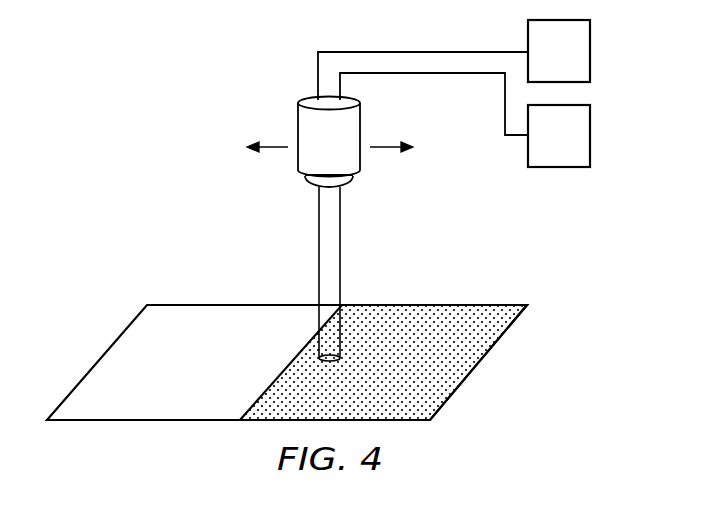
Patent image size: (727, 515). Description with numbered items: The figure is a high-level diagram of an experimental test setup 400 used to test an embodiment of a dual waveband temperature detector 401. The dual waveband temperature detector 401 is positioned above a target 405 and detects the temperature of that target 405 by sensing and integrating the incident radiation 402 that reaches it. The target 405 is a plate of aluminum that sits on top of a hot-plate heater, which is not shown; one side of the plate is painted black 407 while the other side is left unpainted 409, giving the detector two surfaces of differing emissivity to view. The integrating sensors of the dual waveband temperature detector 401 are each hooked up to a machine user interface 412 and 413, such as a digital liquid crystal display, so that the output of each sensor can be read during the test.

The experimental test setup 400 is at (117, 20).
The dual waveband temperature detector 401 is at (298, 125).
The incident radiation 402 is at (318, 245).
The target 405 is at (100, 360).
The painted black side 407 is at (473, 312).
The unpainted side 409 is at (188, 313).
The machine user interface 412 is at (578, 64).
The machine user interface 413 is at (578, 149).